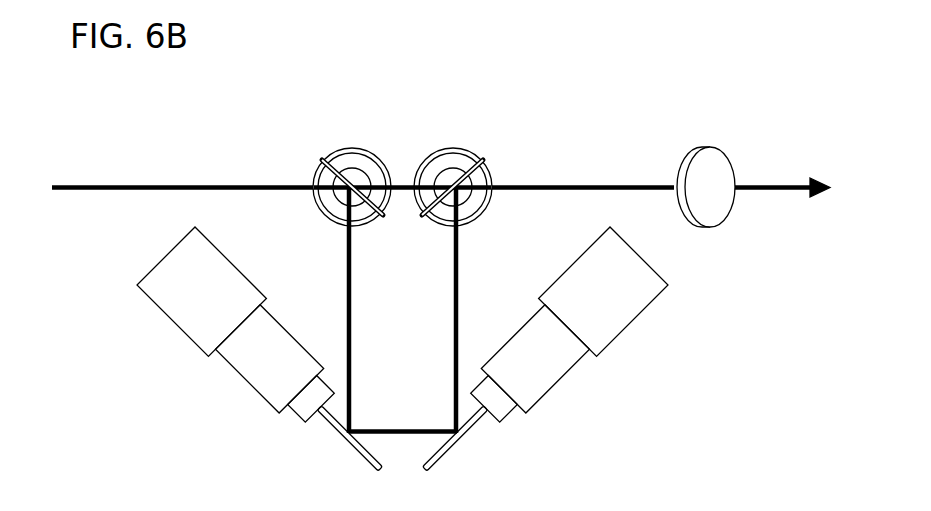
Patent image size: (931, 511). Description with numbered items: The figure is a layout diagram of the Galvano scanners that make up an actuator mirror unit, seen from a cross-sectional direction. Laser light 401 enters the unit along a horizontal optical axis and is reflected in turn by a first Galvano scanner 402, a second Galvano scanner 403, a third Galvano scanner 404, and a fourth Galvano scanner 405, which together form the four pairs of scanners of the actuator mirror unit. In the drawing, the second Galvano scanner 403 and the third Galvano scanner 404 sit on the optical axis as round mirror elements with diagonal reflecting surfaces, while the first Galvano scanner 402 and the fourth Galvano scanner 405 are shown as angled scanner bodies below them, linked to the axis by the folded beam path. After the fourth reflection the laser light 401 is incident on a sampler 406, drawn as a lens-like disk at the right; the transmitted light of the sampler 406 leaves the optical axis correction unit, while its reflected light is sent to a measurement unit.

The laser light 401 is at (102, 186).
The first Galvano scanner 402 is at (227, 363).
The second Galvano scanner 403 is at (320, 210).
The third Galvano scanner 404 is at (489, 210).
The fourth Galvano scanner 405 is at (578, 363).
The sampler 406 is at (734, 201).